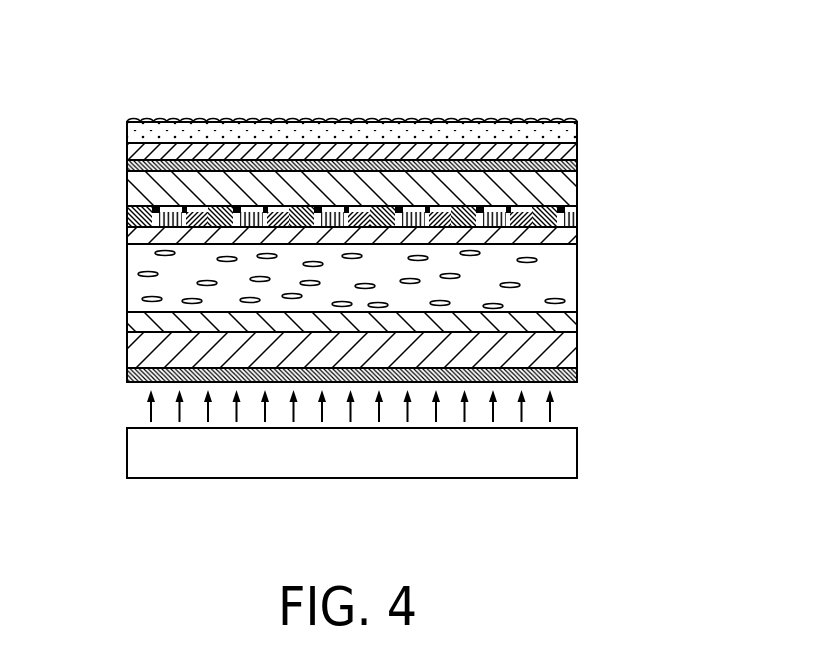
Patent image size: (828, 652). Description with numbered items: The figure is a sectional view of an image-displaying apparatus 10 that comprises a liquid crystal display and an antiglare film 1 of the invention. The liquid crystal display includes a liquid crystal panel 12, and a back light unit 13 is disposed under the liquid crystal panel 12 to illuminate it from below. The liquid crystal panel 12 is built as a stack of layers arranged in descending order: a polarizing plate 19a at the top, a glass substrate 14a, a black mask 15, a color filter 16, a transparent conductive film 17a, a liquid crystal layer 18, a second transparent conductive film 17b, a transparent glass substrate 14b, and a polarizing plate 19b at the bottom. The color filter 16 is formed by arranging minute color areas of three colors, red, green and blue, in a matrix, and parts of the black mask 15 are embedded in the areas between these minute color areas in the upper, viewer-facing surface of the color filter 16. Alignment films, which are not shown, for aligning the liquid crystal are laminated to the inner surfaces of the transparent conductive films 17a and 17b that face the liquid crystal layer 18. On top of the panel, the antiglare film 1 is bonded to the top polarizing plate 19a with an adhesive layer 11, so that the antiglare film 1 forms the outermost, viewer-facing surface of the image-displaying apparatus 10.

The image-displaying apparatus 10 is at (462, 95).
The antiglare film 1 is at (128, 132).
The adhesive layer 11 is at (128, 153).
The liquid crystal panel 12 is at (115, 165).
The back light unit 13 is at (212, 459).
The glass substrate 14a is at (565, 183).
The transparent glass substrate 14b is at (565, 350).
The black mask 15 is at (558, 207).
The color filter 16 is at (577, 212).
The transparent conductive film 17a is at (565, 238).
The transparent conductive film 17b is at (565, 327).
The liquid crystal layer 18 is at (560, 275).
The polarizing plate 19a is at (567, 168).
The polarizing plate 19b is at (565, 375).